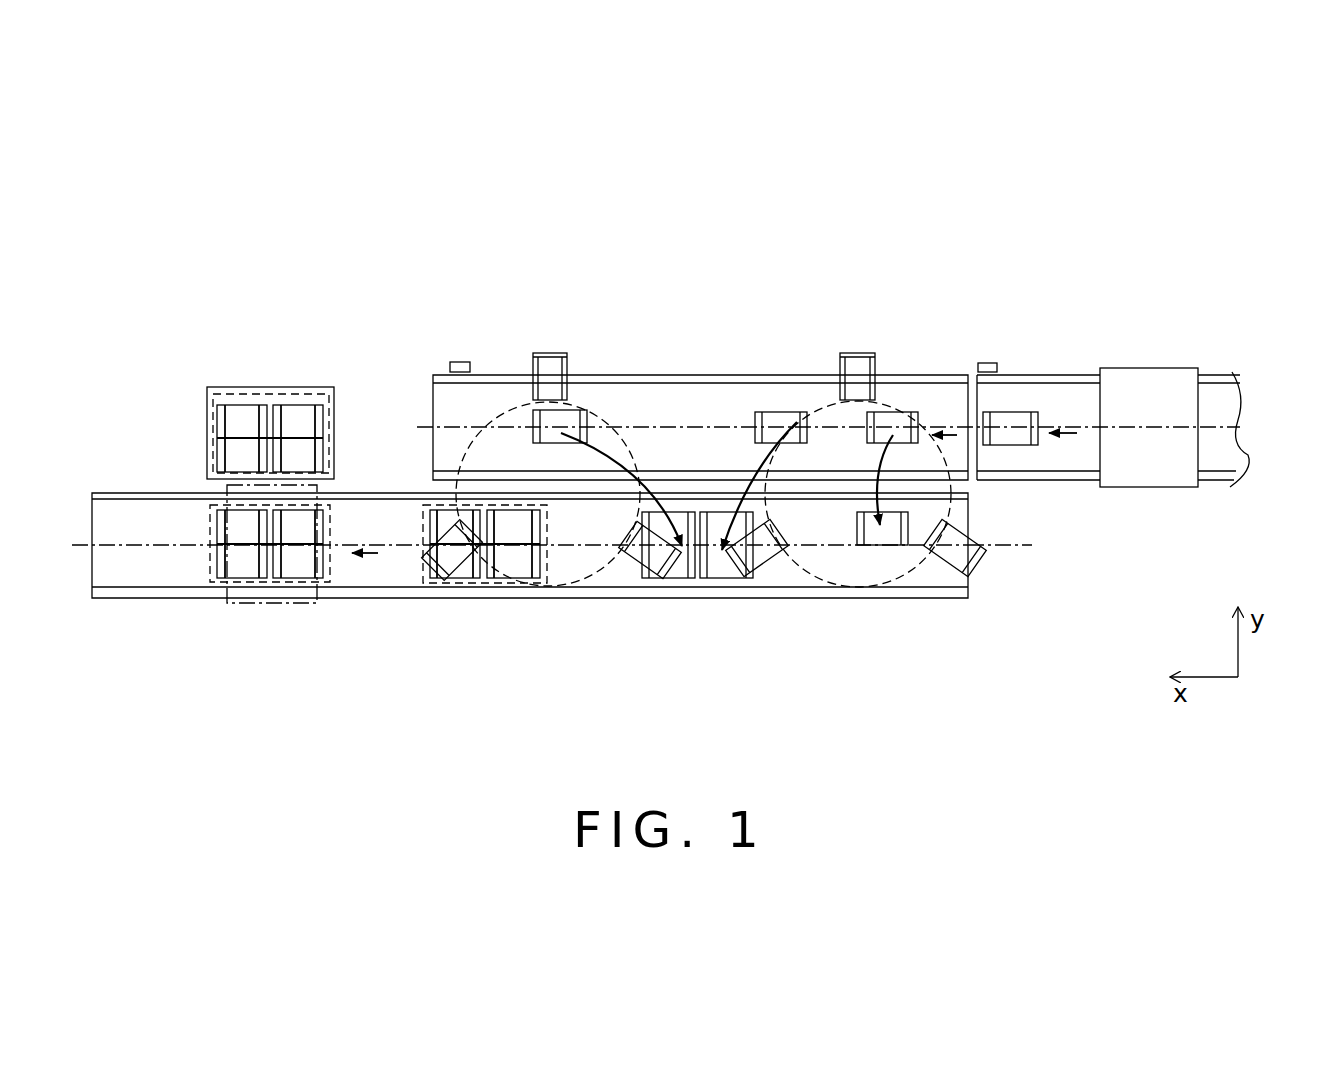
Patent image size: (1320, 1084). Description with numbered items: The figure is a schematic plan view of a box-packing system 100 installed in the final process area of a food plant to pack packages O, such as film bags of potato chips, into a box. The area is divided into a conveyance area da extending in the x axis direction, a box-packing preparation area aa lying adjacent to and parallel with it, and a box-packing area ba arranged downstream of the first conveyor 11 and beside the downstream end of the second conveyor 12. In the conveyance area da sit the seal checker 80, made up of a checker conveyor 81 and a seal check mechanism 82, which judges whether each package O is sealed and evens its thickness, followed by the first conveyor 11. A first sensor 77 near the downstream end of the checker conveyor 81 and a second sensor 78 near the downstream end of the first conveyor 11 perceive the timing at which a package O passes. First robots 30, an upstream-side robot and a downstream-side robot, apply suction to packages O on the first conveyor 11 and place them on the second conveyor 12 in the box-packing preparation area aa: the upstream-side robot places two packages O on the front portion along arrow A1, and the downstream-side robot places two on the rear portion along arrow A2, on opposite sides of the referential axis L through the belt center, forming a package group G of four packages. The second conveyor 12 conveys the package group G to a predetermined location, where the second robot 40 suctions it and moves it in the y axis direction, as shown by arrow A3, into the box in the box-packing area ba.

The box-packing system 100 is at (1149, 197).
The first conveyor 11 is at (743, 374).
The second conveyor 12 is at (707, 600).
The first robot 30 is at (930, 310).
The second robot 40 is at (269, 606).
The first sensor 77 is at (988, 363).
The second sensor 78 is at (462, 362).
The seal checker 80 is at (1113, 368).
The checker conveyor 81 is at (1054, 367).
The seal check mechanism 82 is at (1122, 367).
The package O is at (1008, 412).
The package group G is at (537, 593).
The referential axis L is at (1009, 546).
The arrow A1 is at (877, 495).
The arrow A2 is at (704, 512).
The arrow A3 is at (331, 505).
The box-packing area ba is at (331, 367).
The box-packing preparation area aa is at (995, 578).
The conveyance area da is at (1206, 345).